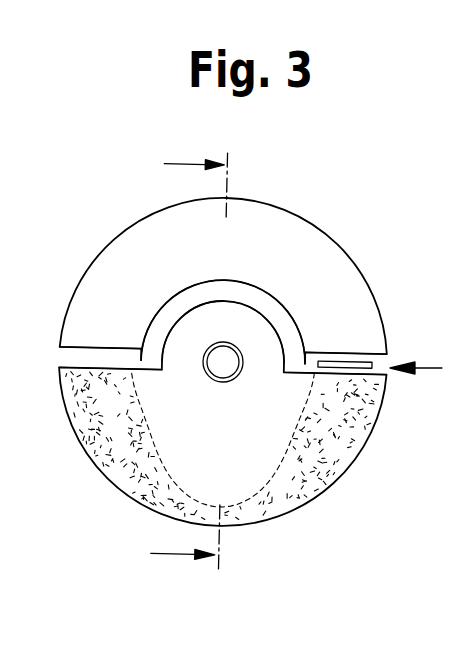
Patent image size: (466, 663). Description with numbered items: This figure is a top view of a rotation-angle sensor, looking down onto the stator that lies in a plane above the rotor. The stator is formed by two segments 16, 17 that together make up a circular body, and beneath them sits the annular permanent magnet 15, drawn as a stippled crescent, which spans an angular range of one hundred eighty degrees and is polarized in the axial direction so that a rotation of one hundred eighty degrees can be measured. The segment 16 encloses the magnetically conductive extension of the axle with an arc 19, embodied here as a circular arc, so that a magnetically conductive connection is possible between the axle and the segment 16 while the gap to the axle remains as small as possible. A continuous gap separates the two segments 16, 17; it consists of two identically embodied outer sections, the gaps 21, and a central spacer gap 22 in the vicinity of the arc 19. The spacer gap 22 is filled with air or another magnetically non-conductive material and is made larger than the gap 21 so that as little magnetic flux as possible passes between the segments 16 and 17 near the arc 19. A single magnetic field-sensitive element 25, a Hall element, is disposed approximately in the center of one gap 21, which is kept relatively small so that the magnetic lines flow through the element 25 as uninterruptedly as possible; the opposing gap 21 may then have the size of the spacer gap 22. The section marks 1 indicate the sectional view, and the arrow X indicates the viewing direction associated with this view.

The permanent magnet 15 is at (267, 500).
The segment 16 is at (238, 418).
The segment 17 is at (325, 280).
The arc 19 is at (258, 323).
The gap 21 is at (75, 353).
The spacer gap 22 is at (162, 320).
The magnetic field-sensitive element 25 is at (350, 370).
The section line 1- 1 is at (199, 361).
The direction X is at (417, 384).